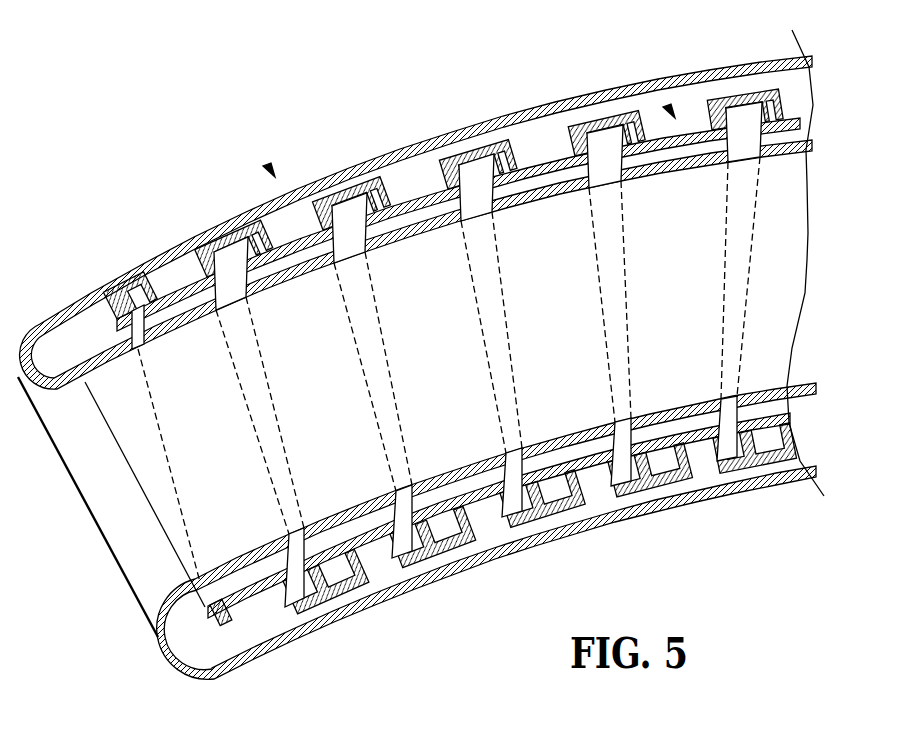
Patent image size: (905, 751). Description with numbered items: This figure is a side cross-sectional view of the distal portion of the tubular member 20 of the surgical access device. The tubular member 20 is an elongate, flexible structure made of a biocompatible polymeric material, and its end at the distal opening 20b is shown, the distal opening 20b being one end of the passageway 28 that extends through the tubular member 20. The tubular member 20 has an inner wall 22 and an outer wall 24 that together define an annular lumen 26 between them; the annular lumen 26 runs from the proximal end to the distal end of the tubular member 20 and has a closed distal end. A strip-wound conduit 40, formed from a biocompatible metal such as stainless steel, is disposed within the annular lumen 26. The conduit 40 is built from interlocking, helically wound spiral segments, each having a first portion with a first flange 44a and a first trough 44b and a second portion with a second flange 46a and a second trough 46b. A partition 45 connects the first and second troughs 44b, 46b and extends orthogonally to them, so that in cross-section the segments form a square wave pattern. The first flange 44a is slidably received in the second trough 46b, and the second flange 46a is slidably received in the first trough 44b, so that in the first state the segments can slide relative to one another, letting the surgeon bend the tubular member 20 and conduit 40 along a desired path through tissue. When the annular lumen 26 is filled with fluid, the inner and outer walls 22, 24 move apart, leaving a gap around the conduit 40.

The tubular member 20 is at (272, 172).
The distal opening 20b is at (133, 573).
The inner wall 22 is at (87, 380).
The outer wall 24 is at (521, 111).
The annular lumen 26 is at (252, 616).
The passageway 28 is at (787, 261).
The conduit 40 is at (672, 113).
The first flange 44a is at (118, 300).
The first trough 44b is at (175, 290).
The partition 45 is at (207, 262).
The second flange 46a is at (282, 228).
The second trough 46b is at (237, 243).